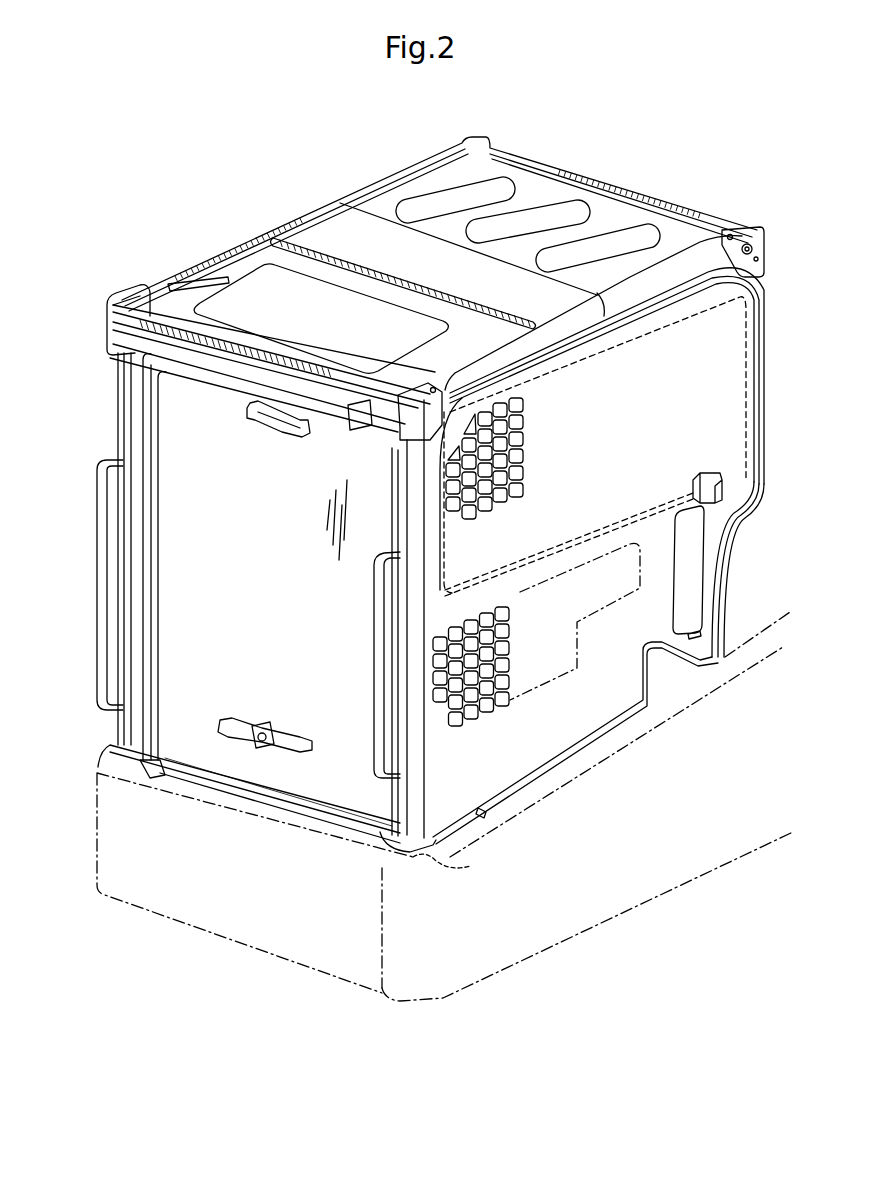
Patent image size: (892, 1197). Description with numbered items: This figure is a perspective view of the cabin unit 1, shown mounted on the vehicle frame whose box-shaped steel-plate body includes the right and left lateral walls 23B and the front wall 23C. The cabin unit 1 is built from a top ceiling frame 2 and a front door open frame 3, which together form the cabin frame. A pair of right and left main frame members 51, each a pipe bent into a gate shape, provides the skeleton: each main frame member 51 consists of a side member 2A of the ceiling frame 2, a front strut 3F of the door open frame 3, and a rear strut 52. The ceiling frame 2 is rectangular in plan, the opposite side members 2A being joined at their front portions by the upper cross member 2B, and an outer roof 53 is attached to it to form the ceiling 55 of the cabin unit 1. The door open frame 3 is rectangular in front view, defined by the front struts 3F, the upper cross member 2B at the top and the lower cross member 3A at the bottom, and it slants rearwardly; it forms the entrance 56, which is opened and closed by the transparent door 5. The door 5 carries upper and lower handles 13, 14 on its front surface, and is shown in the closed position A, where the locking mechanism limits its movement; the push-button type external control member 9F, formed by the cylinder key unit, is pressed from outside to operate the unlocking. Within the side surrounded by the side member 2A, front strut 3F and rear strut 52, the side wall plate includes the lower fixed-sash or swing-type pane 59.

The cabin unit 1 is at (615, 136).
The ceiling frame 2 is at (173, 266).
The side member 2A is at (580, 322).
The upper cross member 2B is at (148, 303).
The door open frame 3 is at (104, 415).
The lower cross member 3A is at (210, 787).
The front strut 3F is at (420, 770).
The door 5 is at (340, 782).
The external control member 9F is at (263, 728).
The upper handle 13 is at (234, 720).
The lower handle 14 is at (262, 425).
The lateral wall 23B is at (695, 878).
The front wall 23C is at (278, 938).
The main frame member 51 is at (693, 243).
The rear strut 52 is at (762, 358).
The outer roof 53 is at (377, 204).
The ceiling 55 is at (363, 172).
The entrance 56 is at (155, 718).
The fixed-sash pane or swing-type pane 59 is at (515, 688).
The closed position A is at (299, 800).